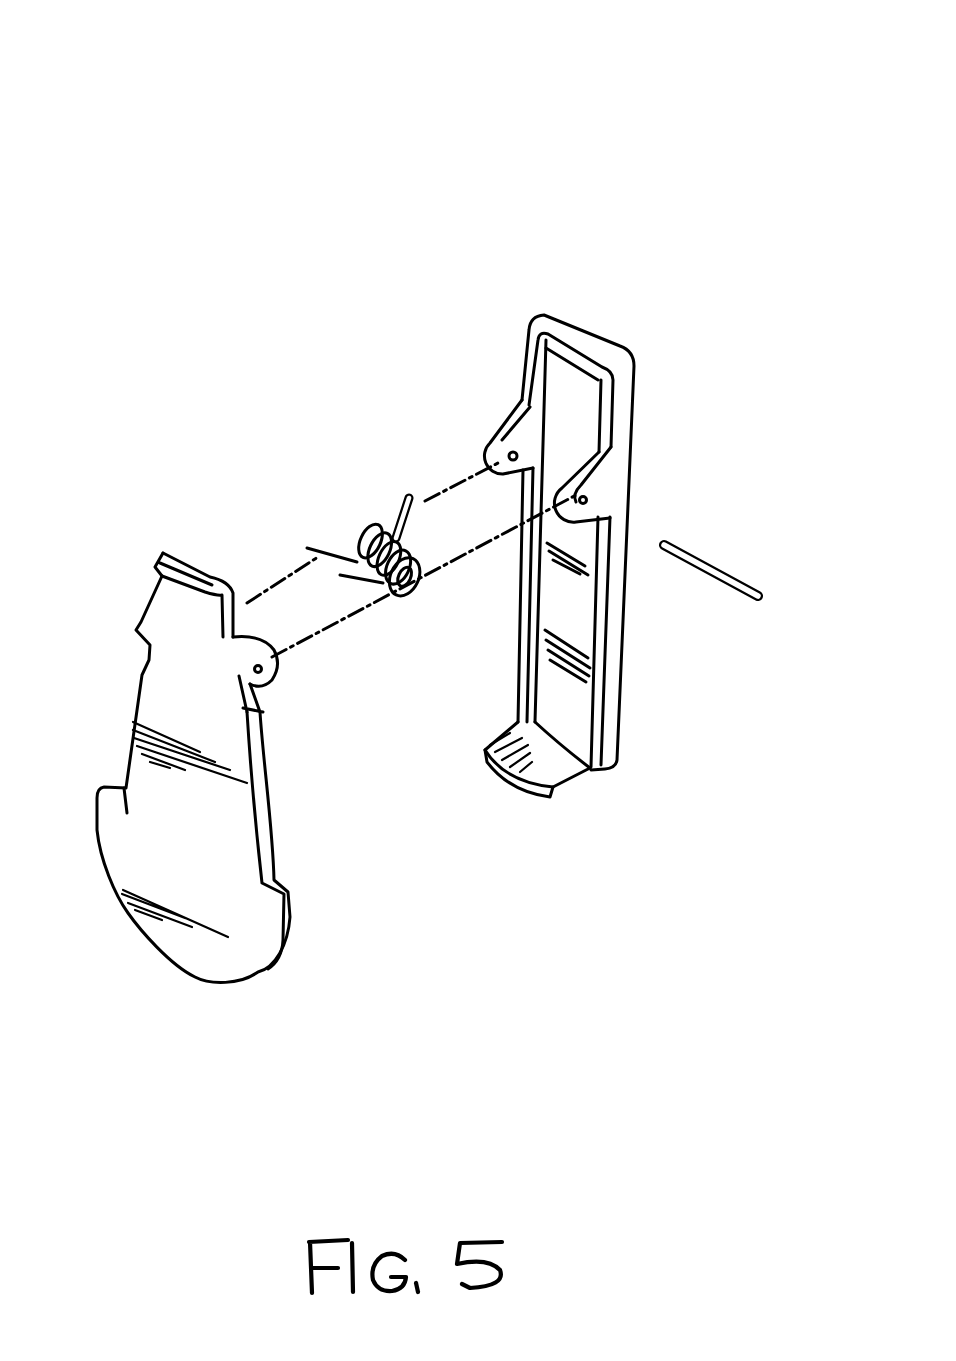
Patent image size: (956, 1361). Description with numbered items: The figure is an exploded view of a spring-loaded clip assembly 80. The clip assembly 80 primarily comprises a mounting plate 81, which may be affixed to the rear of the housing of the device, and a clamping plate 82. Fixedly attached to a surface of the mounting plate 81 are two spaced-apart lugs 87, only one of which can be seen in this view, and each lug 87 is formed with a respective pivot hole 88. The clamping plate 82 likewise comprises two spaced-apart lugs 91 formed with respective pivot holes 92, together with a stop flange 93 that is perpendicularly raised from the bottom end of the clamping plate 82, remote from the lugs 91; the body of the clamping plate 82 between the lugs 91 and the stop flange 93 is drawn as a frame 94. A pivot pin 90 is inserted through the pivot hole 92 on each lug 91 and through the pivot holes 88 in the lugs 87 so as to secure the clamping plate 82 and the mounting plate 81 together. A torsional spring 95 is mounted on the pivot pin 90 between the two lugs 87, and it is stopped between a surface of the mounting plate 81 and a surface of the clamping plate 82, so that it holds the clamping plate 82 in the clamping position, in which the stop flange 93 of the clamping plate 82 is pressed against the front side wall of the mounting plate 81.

The spring-loaded clip assembly 80 is at (250, 180).
The mounting plate 81 is at (162, 698).
The clamping plate 82 is at (607, 292).
The lug 87 is at (275, 664).
The pivot hole 88 is at (267, 680).
The pivot pin 90 is at (712, 580).
The lug 91 is at (493, 440).
The pivot hole 92 is at (590, 497).
The stop flange 93 is at (568, 790).
The frame 94 is at (637, 375).
The torsional spring 95 is at (369, 530).